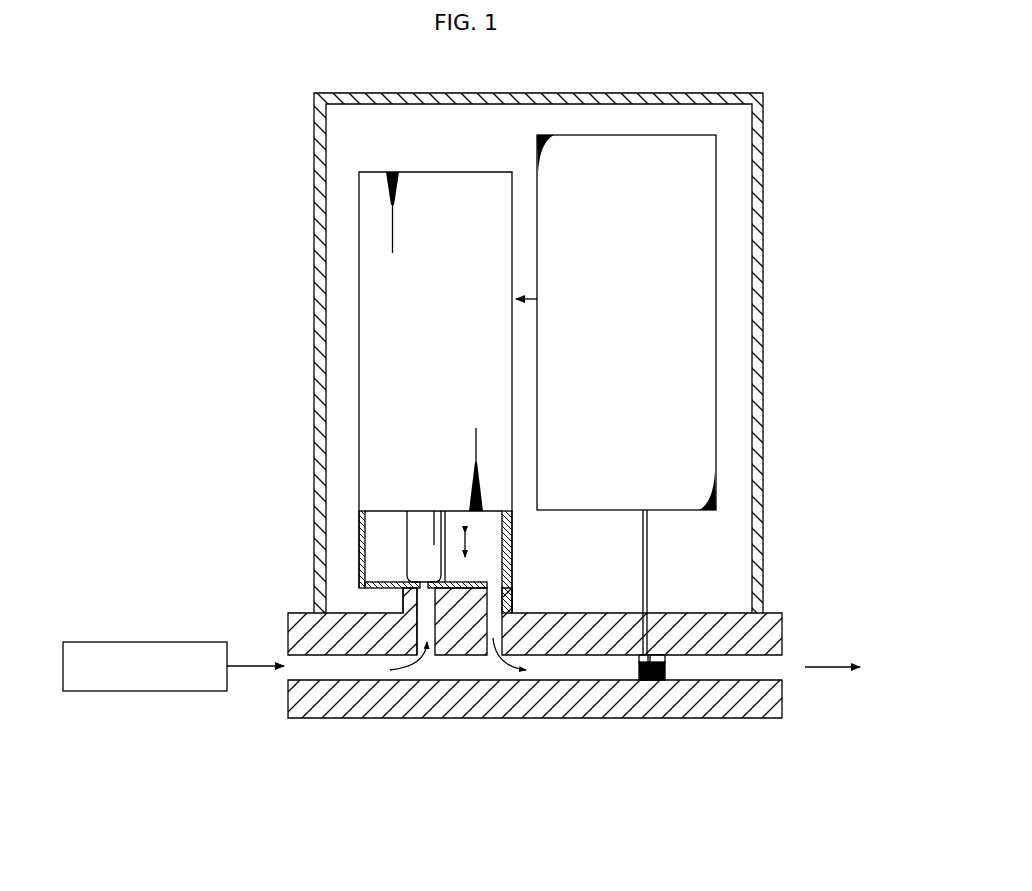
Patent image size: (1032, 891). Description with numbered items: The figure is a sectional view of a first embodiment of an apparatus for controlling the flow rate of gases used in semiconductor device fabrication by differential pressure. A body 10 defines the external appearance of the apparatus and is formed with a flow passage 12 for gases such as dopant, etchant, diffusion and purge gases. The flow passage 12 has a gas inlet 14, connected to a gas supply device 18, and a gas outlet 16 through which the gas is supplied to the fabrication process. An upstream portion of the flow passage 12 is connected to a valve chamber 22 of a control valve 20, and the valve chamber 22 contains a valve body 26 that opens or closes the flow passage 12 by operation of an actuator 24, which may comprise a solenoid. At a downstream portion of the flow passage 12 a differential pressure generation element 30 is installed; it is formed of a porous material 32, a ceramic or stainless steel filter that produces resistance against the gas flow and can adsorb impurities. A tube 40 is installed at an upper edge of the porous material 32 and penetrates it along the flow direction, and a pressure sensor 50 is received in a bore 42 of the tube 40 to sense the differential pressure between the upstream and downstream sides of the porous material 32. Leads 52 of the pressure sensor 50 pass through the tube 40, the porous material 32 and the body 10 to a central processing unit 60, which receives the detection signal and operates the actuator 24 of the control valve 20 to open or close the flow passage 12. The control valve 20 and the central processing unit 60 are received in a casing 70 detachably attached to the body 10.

The body 10 is at (439, 709).
The flow passage 12 is at (566, 672).
The gas inlet 14 is at (300, 668).
The gas outlet 16 is at (776, 660).
The gas supply device 18 is at (143, 642).
The control valve 20 is at (354, 275).
The valve chamber 22 is at (381, 548).
The actuator 24 is at (368, 352).
The valve body 26 is at (441, 554).
The differential pressure generation element 30 is at (638, 672).
The porous material 32 is at (645, 681).
The tube 40 is at (660, 657).
The bore 42 is at (641, 657).
The pressure sensor 50 is at (641, 655).
The leads 52 is at (648, 528).
The central processing unit 60 is at (717, 330).
The casing 70 is at (764, 172).